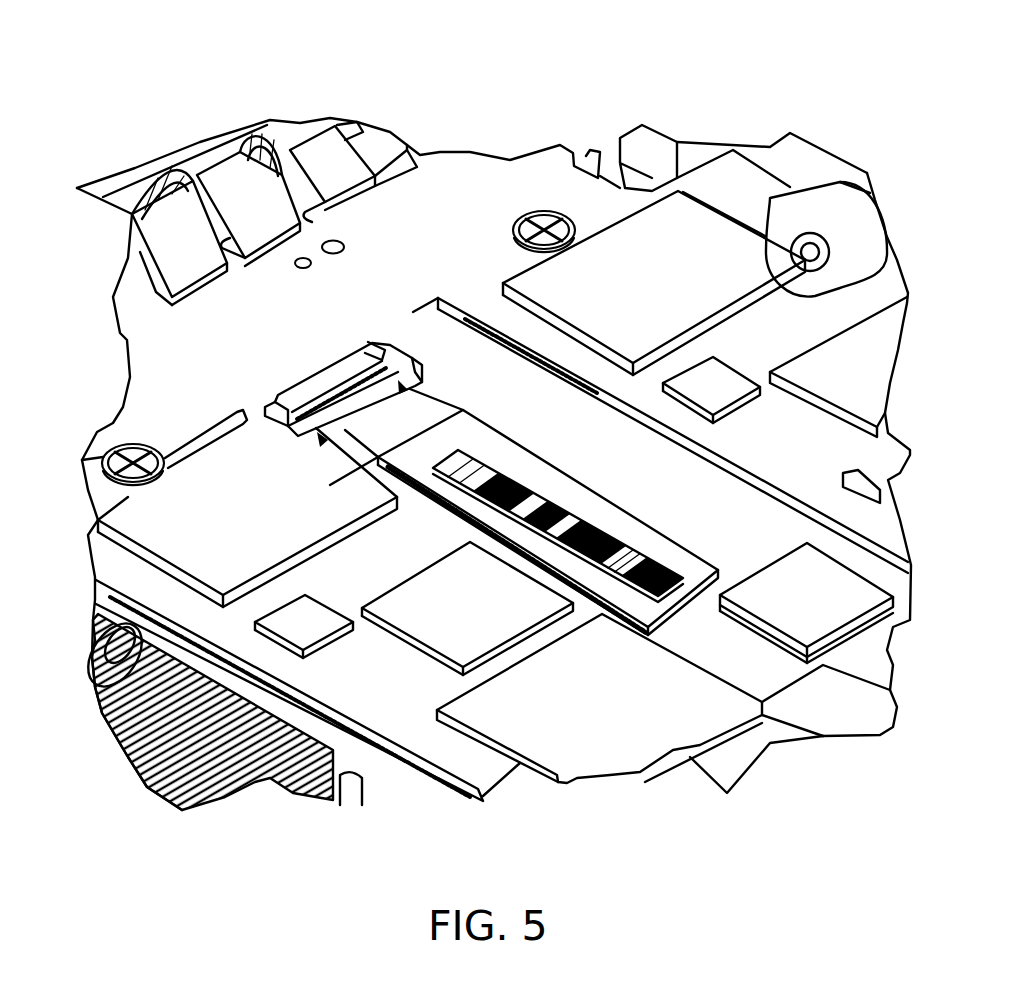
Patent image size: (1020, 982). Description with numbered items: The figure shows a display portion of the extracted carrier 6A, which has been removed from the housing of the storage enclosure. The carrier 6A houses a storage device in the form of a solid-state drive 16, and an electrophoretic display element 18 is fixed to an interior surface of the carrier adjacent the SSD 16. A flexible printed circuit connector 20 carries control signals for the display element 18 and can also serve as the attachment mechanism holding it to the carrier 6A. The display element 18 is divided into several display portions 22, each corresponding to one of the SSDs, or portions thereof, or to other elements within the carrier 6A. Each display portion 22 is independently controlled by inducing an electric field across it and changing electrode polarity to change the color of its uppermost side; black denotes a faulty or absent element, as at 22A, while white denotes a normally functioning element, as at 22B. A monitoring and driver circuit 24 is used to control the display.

The selected carrier 6A is at (304, 76).
The solid-state drive 16 is at (683, 237).
The electrophoretic display element 18 is at (672, 595).
The flexible printed circuit connector 20 is at (403, 423).
The display portion 22 is at (618, 510).
The black display portion 22A is at (530, 500).
The white display portion 22B is at (453, 467).
The monitoring and driver circuit 24 is at (817, 605).